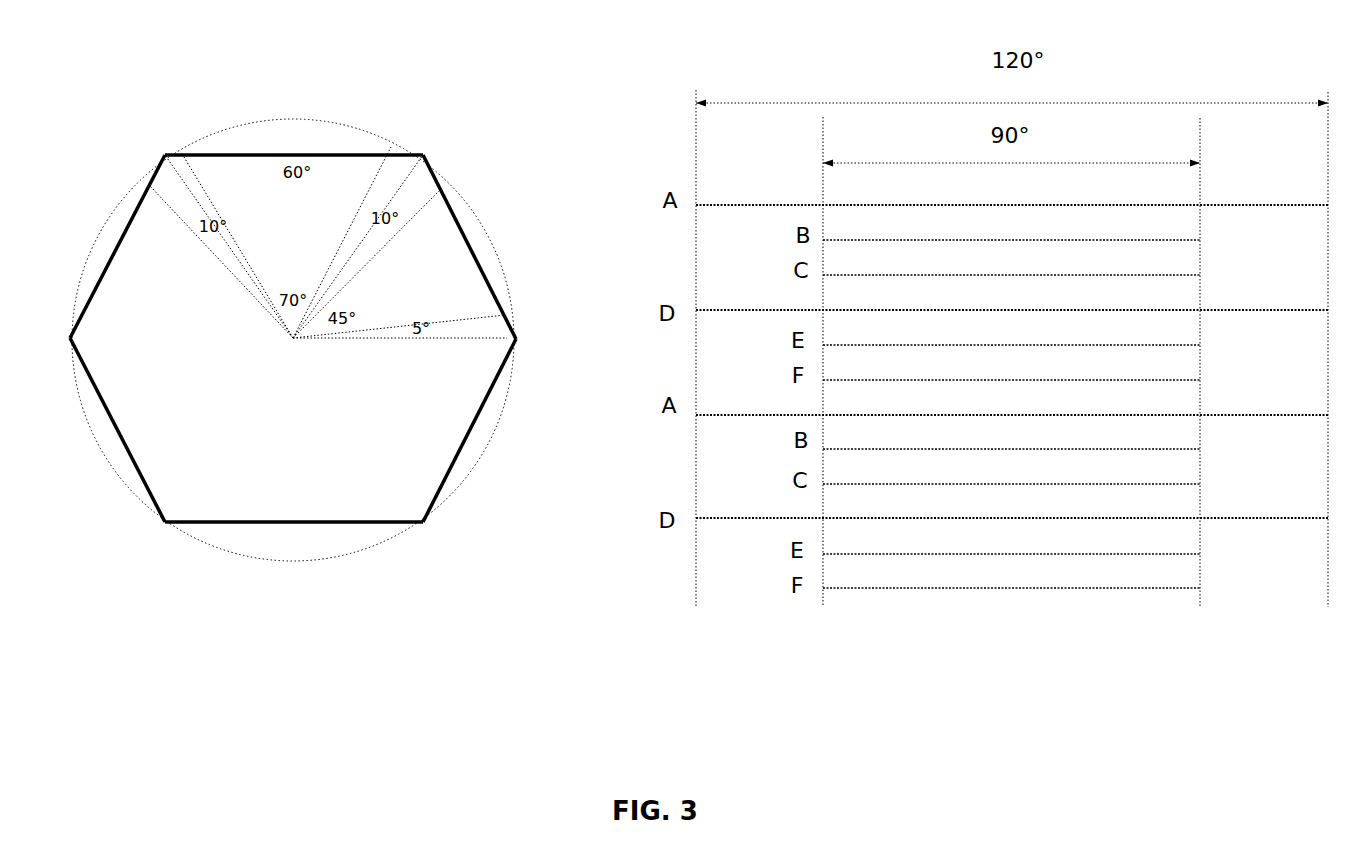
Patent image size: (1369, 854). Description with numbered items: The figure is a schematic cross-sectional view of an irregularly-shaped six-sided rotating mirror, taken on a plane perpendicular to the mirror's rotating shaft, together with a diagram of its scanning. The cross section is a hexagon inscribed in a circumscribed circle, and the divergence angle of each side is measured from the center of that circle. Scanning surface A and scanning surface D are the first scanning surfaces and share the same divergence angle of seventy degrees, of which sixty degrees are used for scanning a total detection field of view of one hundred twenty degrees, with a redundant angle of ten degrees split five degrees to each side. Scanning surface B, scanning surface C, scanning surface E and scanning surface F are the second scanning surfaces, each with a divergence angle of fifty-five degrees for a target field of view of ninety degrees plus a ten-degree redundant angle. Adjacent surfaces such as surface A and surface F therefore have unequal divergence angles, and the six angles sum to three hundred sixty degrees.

The scanning surface A is at (294, 135).
The scanning surface B is at (117, 246).
The scanning surface C is at (117, 430).
The scanning surface D is at (294, 542).
The scanning surface E is at (469, 430).
The scanning surface F is at (469, 247).